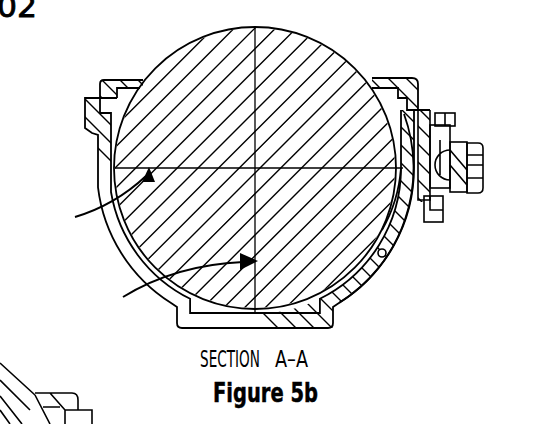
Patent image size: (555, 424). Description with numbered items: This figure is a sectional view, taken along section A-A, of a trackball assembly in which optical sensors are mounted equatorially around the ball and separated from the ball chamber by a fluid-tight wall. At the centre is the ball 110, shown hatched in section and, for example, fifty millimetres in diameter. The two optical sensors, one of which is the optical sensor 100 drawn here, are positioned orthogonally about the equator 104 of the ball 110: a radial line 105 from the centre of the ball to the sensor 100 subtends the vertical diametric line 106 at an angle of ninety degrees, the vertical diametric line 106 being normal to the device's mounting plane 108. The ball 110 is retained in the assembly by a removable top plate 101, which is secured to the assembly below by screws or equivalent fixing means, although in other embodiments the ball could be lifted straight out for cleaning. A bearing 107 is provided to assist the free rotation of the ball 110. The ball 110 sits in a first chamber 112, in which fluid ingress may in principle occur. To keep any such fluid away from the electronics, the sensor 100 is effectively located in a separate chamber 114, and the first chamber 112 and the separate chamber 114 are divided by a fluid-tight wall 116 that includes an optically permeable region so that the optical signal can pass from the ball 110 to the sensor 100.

The optical sensor 100 is at (452, 182).
The removable top plate 101 is at (100, 87).
The equator 104 is at (93, 206).
The radial line 105 is at (390, 232).
The vertical diametric line 106 is at (171, 293).
The bearing 107 is at (383, 258).
The mounting plane 108 is at (121, 78).
The ball 110 is at (335, 65).
The first chamber 112 is at (398, 127).
The separate chamber 114 is at (445, 142).
The fluid-tight wall 116 is at (405, 208).